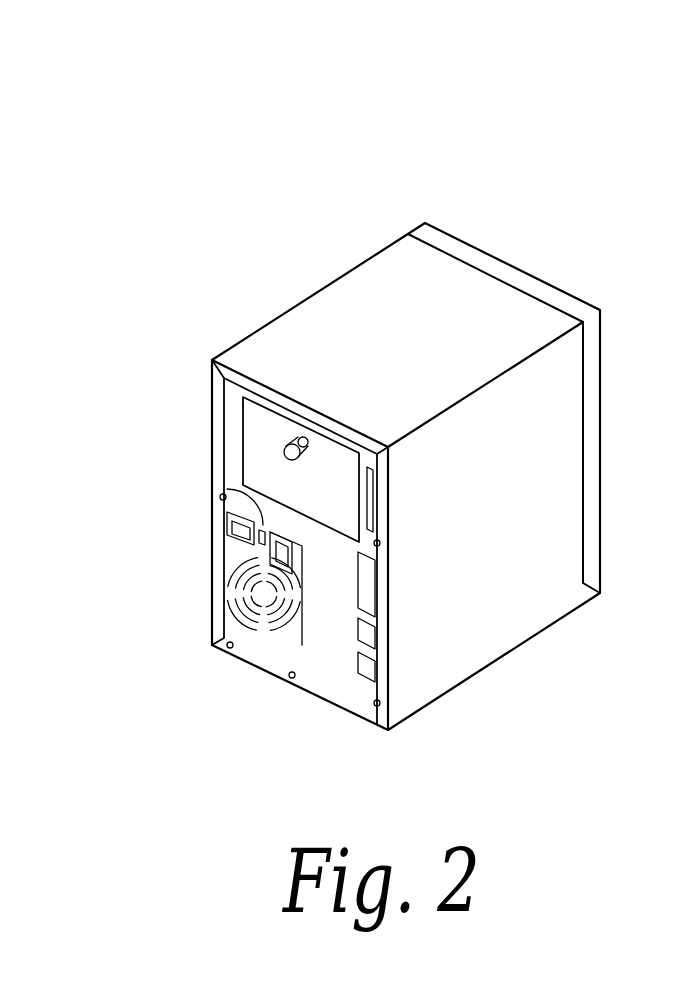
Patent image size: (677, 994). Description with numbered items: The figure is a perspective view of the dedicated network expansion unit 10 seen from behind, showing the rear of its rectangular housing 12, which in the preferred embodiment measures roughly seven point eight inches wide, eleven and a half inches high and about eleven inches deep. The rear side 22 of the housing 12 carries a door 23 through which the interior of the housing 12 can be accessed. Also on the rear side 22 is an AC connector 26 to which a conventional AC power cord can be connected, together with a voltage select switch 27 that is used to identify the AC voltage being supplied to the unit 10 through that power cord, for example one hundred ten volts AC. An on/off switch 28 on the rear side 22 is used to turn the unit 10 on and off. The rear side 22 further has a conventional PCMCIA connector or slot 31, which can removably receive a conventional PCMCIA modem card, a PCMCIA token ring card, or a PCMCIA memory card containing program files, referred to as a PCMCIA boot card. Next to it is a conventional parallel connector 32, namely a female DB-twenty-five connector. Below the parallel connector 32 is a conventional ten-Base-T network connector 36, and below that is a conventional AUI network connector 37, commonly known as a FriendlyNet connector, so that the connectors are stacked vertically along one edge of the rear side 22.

The dedicated network expansion unit 10 is at (562, 190).
The housing 12 is at (543, 322).
The rear side 22 is at (320, 653).
The door 23 is at (260, 427).
The AC connector 26 is at (281, 553).
The voltage select switch 27 is at (224, 486).
The on/off switch 28 is at (236, 528).
The PCMCIA connector or slot 31 is at (372, 505).
The parallel connector 32 is at (367, 583).
The 10-Base-T network connector 36 is at (367, 632).
The AUI network connector 37 is at (367, 667).